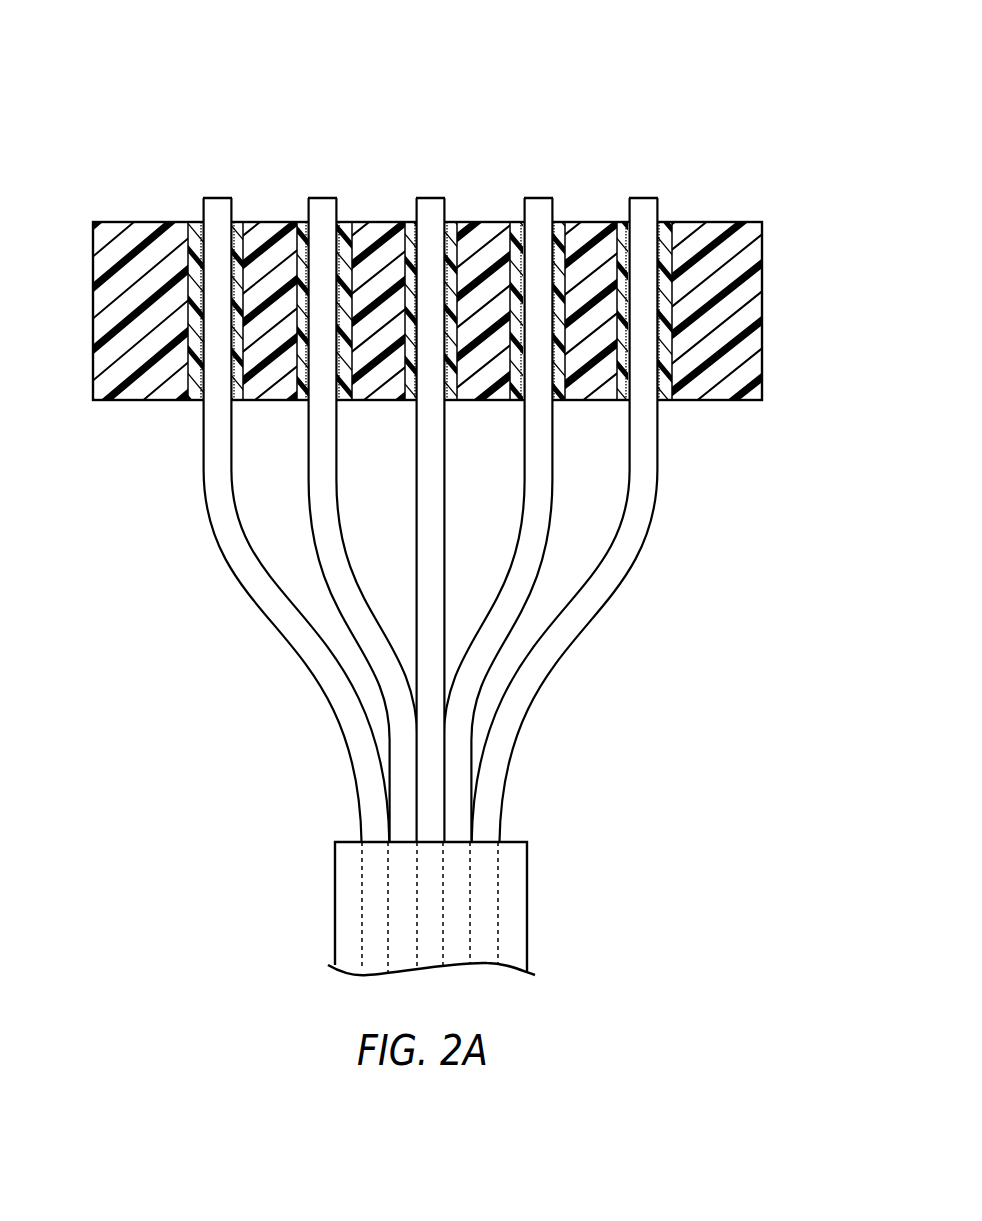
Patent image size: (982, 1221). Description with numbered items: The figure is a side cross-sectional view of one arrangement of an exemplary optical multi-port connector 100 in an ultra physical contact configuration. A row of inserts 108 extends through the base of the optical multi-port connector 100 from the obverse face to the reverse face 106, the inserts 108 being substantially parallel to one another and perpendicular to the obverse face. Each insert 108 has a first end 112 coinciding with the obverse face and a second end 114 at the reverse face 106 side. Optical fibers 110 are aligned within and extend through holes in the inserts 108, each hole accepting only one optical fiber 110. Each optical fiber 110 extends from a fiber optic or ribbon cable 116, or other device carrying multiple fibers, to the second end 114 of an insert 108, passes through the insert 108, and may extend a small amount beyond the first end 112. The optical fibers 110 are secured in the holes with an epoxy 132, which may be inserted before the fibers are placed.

The optical multi-port connector 100 is at (478, 82).
The reverse face 106 is at (726, 402).
The inserts 108 is at (180, 252).
The optical fibers 110 is at (450, 474).
The first end 112 is at (665, 245).
The second end 114 is at (663, 402).
The fiber optic or ribbon cable 116 is at (512, 878).
The epoxy 132 is at (195, 390).